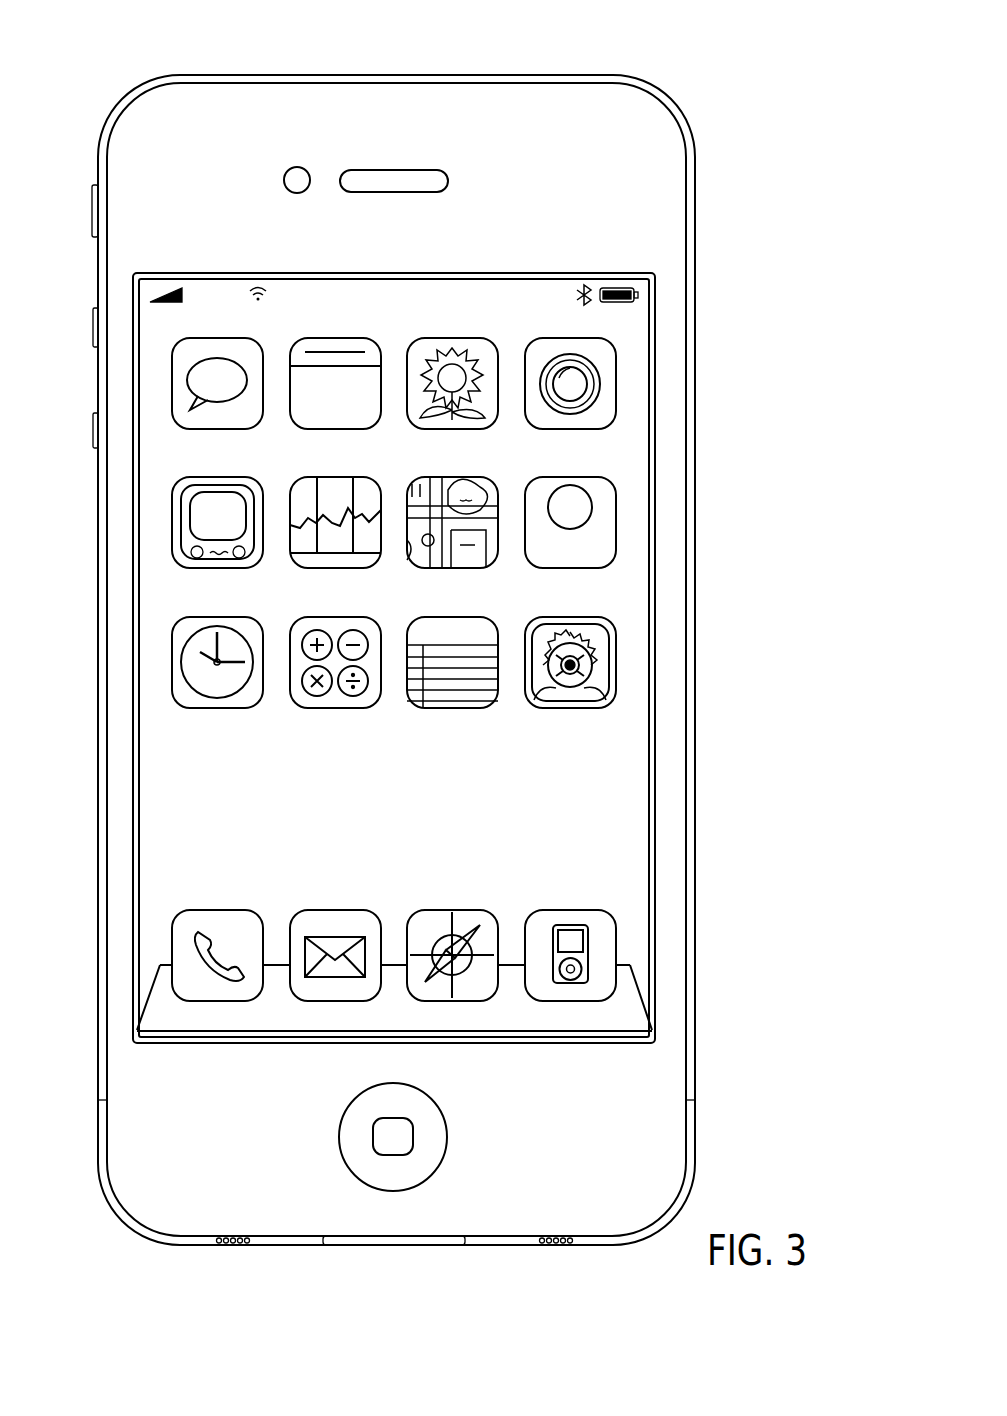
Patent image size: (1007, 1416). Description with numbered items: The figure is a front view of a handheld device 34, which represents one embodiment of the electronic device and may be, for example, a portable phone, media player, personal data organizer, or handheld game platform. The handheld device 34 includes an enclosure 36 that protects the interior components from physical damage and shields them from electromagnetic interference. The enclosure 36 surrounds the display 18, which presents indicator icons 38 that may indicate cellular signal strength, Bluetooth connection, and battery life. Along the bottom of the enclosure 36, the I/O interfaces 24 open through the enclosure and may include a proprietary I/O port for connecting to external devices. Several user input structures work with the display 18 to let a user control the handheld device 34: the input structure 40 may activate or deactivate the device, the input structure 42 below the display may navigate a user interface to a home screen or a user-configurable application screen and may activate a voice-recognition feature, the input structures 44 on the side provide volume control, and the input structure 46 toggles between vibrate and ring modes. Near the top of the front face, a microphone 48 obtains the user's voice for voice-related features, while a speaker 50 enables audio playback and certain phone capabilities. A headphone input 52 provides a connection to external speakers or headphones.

The handheld device 34 is at (195, 33).
The speaker 50 is at (258, 75).
The input structure 40 is at (530, 75).
The enclosure 36 is at (693, 267).
The input structure 46 is at (92, 212).
The input structures 44 is at (93, 327).
The headphone input 52 is at (312, 152).
The microphone 48 is at (415, 170).
The indicator icons 38 is at (182, 290).
The display 18 is at (446, 645).
The input structure 42 is at (447, 1142).
The I/O interfaces 24 is at (372, 1250).